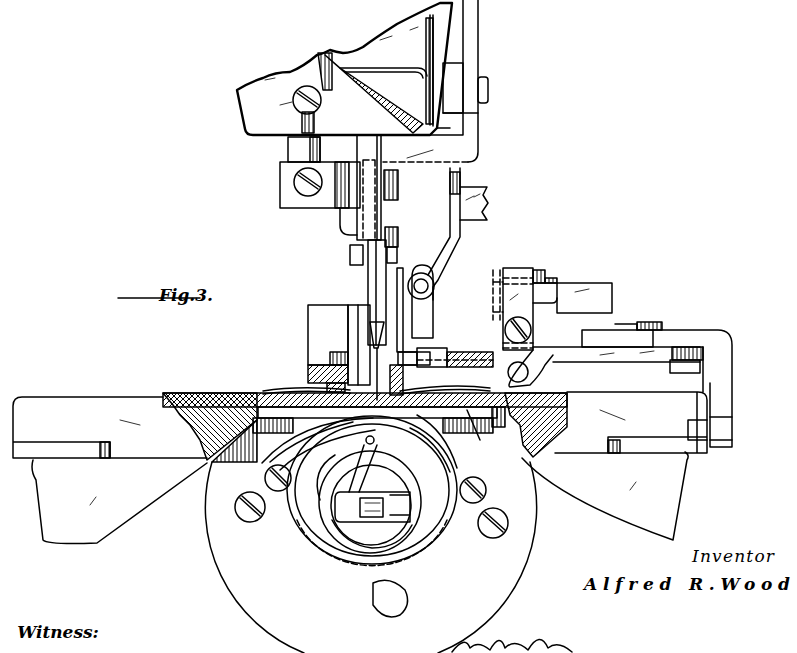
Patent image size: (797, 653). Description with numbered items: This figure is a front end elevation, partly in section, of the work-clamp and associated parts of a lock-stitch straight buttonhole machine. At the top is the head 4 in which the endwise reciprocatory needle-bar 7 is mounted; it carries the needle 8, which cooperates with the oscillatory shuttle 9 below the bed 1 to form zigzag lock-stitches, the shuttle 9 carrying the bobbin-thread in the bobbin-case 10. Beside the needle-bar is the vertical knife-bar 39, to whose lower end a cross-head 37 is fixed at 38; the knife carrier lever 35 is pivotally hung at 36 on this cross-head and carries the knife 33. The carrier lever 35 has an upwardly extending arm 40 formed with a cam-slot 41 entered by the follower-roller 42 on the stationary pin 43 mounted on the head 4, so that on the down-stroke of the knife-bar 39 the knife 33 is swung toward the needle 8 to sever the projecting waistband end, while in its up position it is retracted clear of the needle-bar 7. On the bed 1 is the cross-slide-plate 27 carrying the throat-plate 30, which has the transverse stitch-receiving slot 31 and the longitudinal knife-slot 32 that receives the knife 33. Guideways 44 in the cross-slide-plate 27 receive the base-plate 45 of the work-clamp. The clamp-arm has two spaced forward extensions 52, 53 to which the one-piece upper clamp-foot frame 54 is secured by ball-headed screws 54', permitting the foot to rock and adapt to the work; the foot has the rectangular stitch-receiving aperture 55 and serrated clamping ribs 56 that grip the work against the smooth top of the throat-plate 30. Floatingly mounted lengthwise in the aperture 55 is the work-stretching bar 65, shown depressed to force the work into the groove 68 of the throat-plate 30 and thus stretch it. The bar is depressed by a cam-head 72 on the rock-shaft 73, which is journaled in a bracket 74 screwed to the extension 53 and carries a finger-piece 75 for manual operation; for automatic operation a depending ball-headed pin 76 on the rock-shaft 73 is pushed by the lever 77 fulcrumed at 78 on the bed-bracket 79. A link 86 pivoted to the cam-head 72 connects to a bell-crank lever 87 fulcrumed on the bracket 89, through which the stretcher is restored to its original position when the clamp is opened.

The bed 1 is at (120, 397).
The head 4 is at (450, 40).
The needle-bar 7 is at (360, 142).
The needle 8 is at (368, 282).
The shuttle 9 is at (437, 523).
The bobbin-case 10 is at (370, 538).
The cross-slide-plate 27 is at (233, 407).
The throat-plate 30 is at (330, 433).
The stitch-receiving slot 31 is at (372, 410).
The knife-slot 32 is at (373, 393).
The knife 33 is at (378, 325).
The carrier lever 35 is at (434, 162).
The pivot 36 is at (372, 200).
The cross-head 37 is at (322, 203).
The fixing point 38 is at (293, 183).
The knife-bar 39 is at (290, 151).
The upwardly extending arm 40 is at (483, 57).
The cam-slot 41 is at (470, 117).
The follower-roller 42 is at (470, 75).
The stationary pin 43 is at (490, 90).
The guideways 44 is at (293, 391).
The base-plate 45 is at (467, 410).
The forward extension 52 is at (308, 312).
The forward extension 53 is at (413, 387).
The upper clamp-foot frame 54 is at (303, 363).
The ball-headed screws 54' is at (371, 330).
The stitch-receiving aperture 55 is at (367, 380).
The serrated fabric clamping ribs 56 is at (283, 453).
The work-stretching bar 65 is at (384, 345).
The groove 68 is at (390, 440).
The cam-head 72 is at (408, 352).
The rock-shaft 73 is at (507, 268).
The bracket 74 is at (470, 292).
The finger-piece 75 is at (541, 268).
The ball-headed pin 76 is at (535, 357).
The lever 77 is at (567, 350).
The fulcrum 78 is at (655, 338).
The bed-bracket 79 is at (712, 335).
The link 86 is at (430, 297).
The bell-crank lever 87 is at (455, 240).
The bracket 89 is at (470, 192).